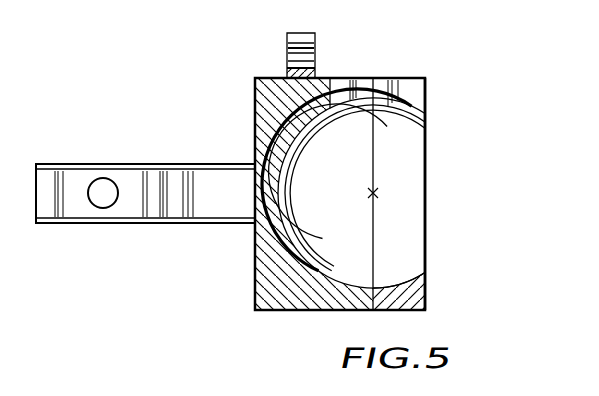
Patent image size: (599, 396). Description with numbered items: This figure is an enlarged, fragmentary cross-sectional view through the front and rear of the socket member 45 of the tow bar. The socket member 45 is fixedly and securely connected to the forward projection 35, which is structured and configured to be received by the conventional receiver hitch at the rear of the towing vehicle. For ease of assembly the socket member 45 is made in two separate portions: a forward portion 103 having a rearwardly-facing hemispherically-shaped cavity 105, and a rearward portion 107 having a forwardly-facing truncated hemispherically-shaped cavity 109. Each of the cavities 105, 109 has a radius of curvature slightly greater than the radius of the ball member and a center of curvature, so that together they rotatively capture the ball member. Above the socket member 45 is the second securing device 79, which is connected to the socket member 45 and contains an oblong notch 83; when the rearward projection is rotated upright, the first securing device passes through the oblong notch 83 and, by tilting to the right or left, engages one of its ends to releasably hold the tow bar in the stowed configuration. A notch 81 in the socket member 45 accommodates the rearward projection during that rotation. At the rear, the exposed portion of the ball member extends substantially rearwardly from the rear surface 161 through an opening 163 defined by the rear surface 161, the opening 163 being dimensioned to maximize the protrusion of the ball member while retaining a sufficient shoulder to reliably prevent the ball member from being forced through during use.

The forward projection 35 is at (85, 172).
The socket member 45 is at (255, 271).
The second securing device 79 is at (297, 33).
The oblong notch 83 is at (297, 60).
The notch 81 is at (360, 87).
The forward portion 103 is at (265, 104).
The rearwardly-facing hemispherically-shaped cavity 105 is at (292, 150).
The rearward portion 107 is at (414, 298).
The forwardly-facing truncated hemispherically-shaped cavity 109 is at (398, 115).
The rear surface 161 is at (412, 294).
The opening 163 is at (424, 120).